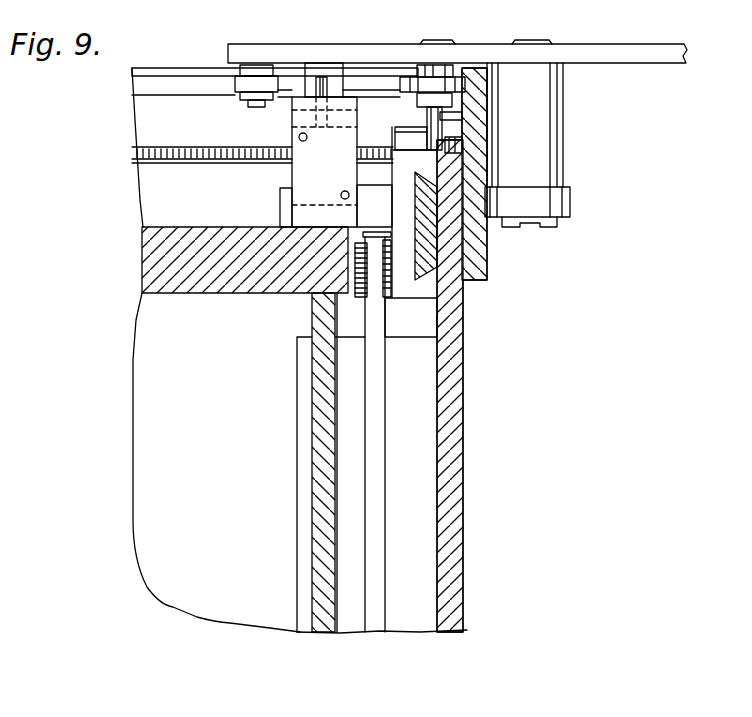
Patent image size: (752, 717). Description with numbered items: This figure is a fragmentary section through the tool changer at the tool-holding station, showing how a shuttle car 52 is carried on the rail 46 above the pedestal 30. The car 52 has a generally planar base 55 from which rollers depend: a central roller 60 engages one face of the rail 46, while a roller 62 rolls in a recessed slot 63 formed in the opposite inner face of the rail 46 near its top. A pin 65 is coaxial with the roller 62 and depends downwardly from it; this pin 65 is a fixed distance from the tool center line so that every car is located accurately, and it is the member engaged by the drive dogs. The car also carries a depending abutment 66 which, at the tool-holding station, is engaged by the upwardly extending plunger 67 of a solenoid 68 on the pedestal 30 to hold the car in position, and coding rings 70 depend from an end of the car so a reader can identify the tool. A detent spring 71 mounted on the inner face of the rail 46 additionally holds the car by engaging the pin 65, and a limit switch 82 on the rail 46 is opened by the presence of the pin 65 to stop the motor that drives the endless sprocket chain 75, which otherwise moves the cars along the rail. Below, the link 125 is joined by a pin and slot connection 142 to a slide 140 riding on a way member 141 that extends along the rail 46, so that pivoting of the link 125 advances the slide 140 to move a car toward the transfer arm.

The pedestal 30 is at (134, 276).
The rail 46 is at (480, 258).
The car 52 is at (602, 48).
The base 55 is at (486, 48).
The central roller 60 is at (568, 200).
The roller 62 is at (408, 78).
The recessed slot 63 is at (140, 86).
The pin 65 is at (432, 117).
The abutment 66 is at (313, 63).
The plunger 67 is at (325, 77).
The solenoid 68 is at (302, 178).
The coding rings 70 is at (238, 99).
The detent spring 71 is at (460, 115).
The endless sprocket chain 75 is at (155, 147).
The limit switch 82 is at (448, 146).
The link 125 is at (378, 398).
The slide 140 is at (408, 288).
The way member 141 is at (428, 267).
The pin and slot connection 142 is at (358, 265).